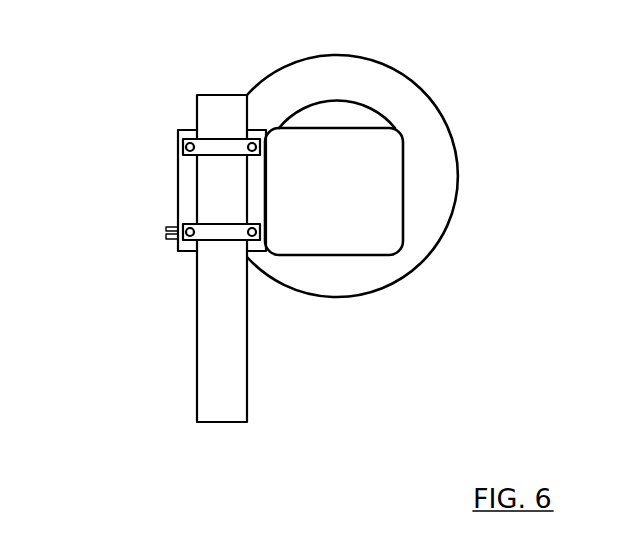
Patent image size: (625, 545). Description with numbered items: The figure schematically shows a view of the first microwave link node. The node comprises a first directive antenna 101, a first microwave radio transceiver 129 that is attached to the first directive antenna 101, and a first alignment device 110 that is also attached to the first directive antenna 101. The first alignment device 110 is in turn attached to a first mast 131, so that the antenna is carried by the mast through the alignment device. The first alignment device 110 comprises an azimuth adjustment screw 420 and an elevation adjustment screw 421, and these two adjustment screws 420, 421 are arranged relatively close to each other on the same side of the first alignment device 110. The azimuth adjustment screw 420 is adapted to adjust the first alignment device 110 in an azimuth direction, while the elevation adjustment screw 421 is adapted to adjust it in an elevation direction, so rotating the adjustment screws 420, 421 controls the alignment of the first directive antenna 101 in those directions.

The first directive antenna 101 is at (415, 252).
The first microwave radio transceiver 129 is at (352, 212).
The first alignment device 110 is at (186, 198).
The first mast 131 is at (208, 362).
The azimuth adjustment screw 420 is at (167, 230).
The elevation adjustment screw 421 is at (167, 242).